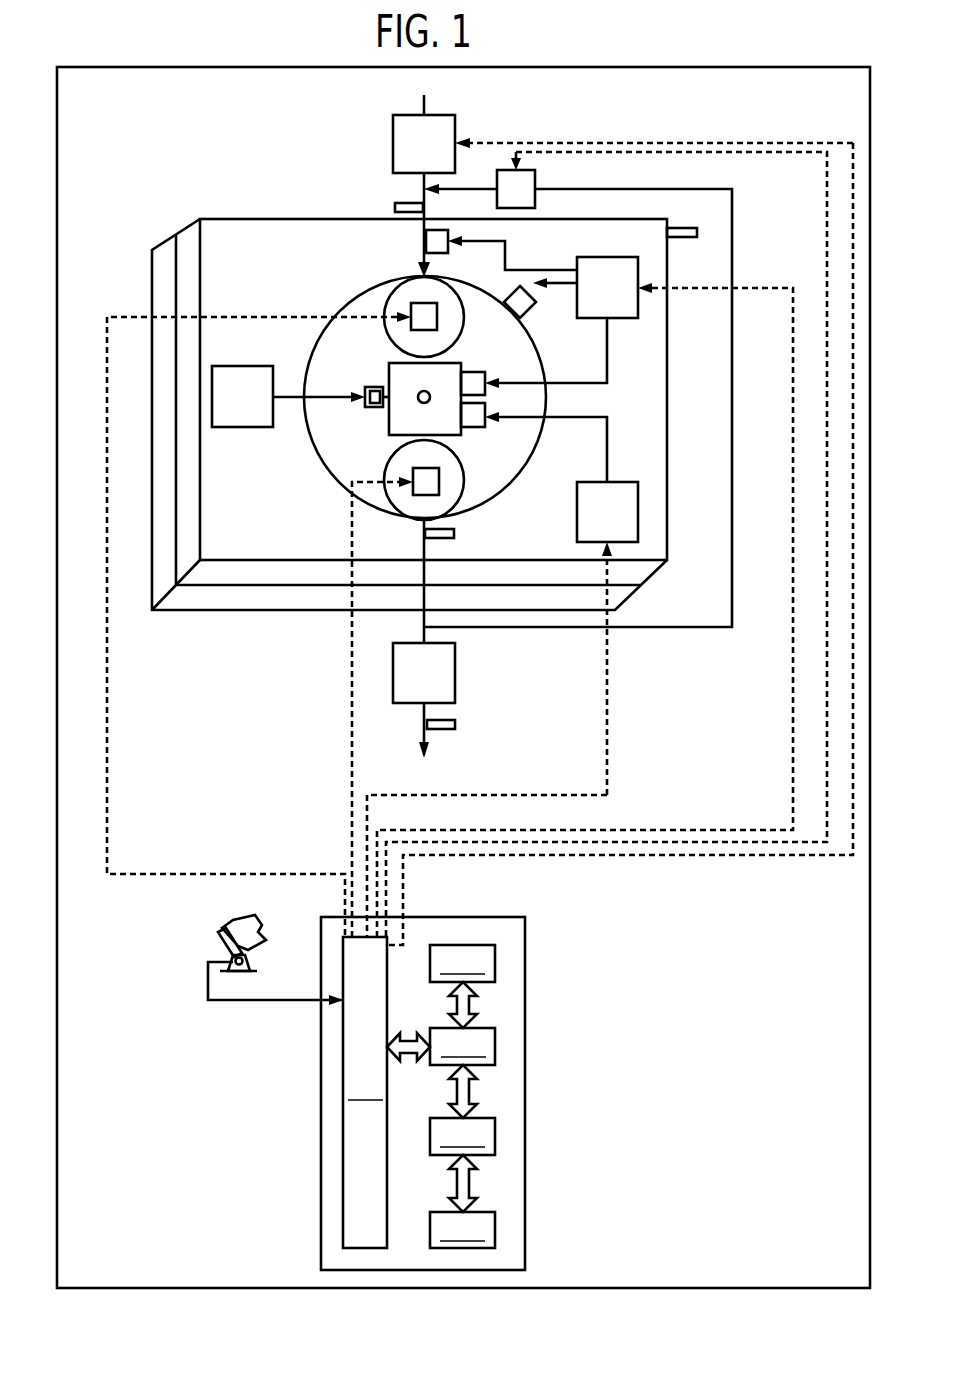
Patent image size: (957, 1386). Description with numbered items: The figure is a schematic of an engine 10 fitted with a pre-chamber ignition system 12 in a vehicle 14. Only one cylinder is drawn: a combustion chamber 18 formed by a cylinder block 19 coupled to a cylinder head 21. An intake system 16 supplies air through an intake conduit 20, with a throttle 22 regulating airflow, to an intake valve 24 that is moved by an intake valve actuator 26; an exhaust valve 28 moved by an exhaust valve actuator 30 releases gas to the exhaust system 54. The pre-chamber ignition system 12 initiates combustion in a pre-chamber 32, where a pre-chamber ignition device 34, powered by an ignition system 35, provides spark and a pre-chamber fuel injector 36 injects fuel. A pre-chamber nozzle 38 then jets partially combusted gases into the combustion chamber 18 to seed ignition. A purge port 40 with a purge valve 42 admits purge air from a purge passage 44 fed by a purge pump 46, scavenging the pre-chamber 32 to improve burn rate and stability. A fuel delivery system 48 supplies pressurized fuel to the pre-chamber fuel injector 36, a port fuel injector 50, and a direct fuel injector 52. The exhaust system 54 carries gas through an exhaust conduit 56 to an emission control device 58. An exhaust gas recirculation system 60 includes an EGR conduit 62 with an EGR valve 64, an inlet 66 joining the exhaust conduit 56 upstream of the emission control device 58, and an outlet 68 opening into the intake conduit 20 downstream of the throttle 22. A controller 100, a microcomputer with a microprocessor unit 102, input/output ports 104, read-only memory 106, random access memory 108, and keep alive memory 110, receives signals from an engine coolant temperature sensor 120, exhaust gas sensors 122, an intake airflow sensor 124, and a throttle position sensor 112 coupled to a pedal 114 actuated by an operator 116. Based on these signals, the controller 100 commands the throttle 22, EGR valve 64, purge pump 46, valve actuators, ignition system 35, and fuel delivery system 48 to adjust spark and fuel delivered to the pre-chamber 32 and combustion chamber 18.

The engine 10 is at (228, 188).
The pre-chamber ignition system 12 is at (272, 288).
The vehicle 14 is at (66, 68).
The intake system 16 is at (315, 156).
The combustion chamber 18 is at (310, 465).
The cylinder block 19 is at (155, 248).
The intake conduit 20 is at (420, 190).
The cylinder head 21 is at (183, 228).
The throttle 22 is at (393, 145).
The intake valve 24 is at (390, 332).
The intake valve actuator 26 is at (438, 318).
The exhaust valve 28 is at (390, 468).
The exhaust valve actuator 30 is at (439, 483).
The pre-chamber 32 is at (436, 431).
The pre-chamber ignition device 34 is at (485, 425).
The ignition system 35 is at (577, 512).
The pre-chamber fuel injector 36 is at (488, 376).
The pre-chamber nozzle 38 is at (419, 395).
The purge port 40 is at (365, 392).
The purge valve 42 is at (370, 404).
The purge passage 44 is at (286, 395).
The purge pump 46 is at (222, 366).
The fuel delivery system 48 is at (590, 246).
The port fuel injector 50 is at (440, 255).
The direct fuel injector 52 is at (532, 310).
The exhaust system 54 is at (308, 645).
The exhaust conduit 56 is at (424, 550).
The emission control device 58 is at (393, 675).
The exhaust gas recirculation system 60 is at (757, 483).
The EGR conduit 62 is at (515, 630).
The EGR valve 64 is at (535, 180).
The inlet 66 is at (424, 630).
The outlet 68 is at (430, 192).
The controller 100 is at (485, 917).
The microprocessor unit 102 is at (480, 1028).
The input/output ports 104 is at (387, 996).
The read-only memory 106 is at (480, 945).
The random access memory 108 is at (480, 1118).
The keep alive memory 110 is at (480, 1212).
The throttle position sensor 112 is at (245, 962).
The pedal 114 is at (222, 938).
The operator 116 is at (262, 927).
The engine coolant temperature sensor 120 is at (682, 238).
The exhaust gas sensor 122 is at (454, 533).
The intake airflow sensor 124 is at (395, 208).